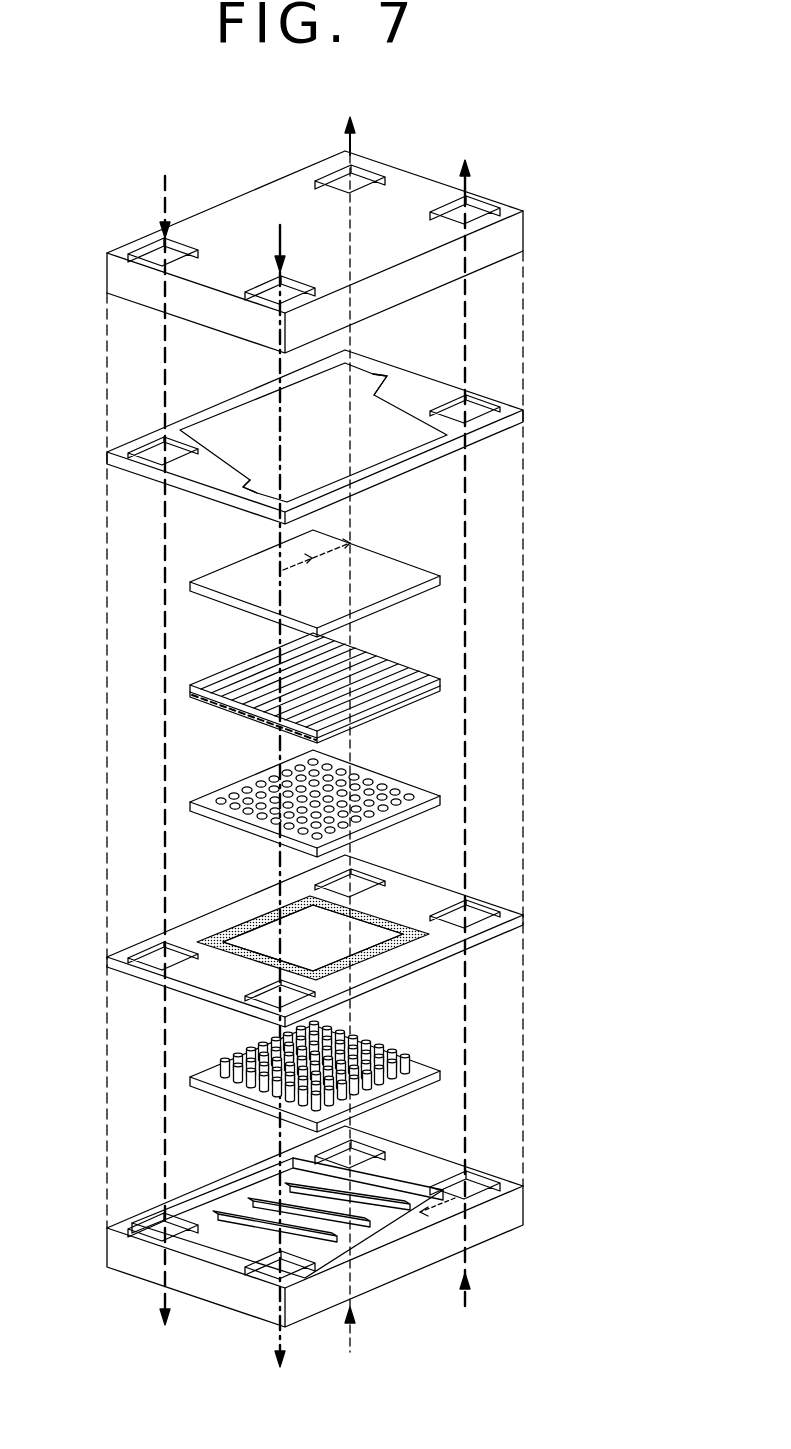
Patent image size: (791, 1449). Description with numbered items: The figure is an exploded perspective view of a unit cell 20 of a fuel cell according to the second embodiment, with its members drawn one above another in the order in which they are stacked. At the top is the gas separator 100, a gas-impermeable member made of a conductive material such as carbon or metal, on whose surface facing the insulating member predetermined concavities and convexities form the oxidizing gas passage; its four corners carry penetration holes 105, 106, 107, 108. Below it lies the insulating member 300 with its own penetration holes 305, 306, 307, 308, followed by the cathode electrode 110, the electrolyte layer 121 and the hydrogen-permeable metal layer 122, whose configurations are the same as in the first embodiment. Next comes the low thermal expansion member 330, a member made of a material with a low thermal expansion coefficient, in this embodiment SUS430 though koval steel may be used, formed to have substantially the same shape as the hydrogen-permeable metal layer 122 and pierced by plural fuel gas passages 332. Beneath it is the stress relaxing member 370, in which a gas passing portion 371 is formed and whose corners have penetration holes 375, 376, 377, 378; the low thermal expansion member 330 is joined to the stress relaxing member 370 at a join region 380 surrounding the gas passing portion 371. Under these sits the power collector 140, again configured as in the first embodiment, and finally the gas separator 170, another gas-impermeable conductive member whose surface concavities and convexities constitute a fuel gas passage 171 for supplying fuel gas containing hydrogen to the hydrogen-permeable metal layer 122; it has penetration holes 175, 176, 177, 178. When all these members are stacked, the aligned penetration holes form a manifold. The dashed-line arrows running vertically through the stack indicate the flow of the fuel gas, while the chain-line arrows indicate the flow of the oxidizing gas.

The unit cell 20 is at (610, 158).
The gas separator 100 is at (526, 235).
The penetration hole 105 is at (470, 218).
The penetration hole 106 is at (357, 183).
The penetration hole 107 is at (158, 262).
The penetration hole 108 is at (270, 298).
The insulating member 300 is at (510, 426).
The penetration hole 305 is at (468, 418).
The penetration hole 306 is at (380, 381).
The penetration hole 307 is at (160, 460).
The penetration hole 308 is at (266, 488).
The cathode electrode 110 is at (420, 562).
The electrolyte layer 121 is at (445, 677).
The hydrogen-permeable metal layer 122 is at (445, 717).
The low thermal expansion member 330 is at (437, 788).
The fuel gas passages 332 is at (367, 778).
The stress relaxing member 370 is at (497, 900).
The gas passing portion 371 is at (332, 938).
The penetration hole 375 is at (473, 925).
The penetration hole 376 is at (362, 880).
The penetration hole 377 is at (160, 955).
The penetration hole 378 is at (272, 1000).
The join region 380 is at (263, 912).
The power collector 140 is at (425, 1063).
The gas separator 170 is at (525, 1213).
The fuel gas passage 171 is at (360, 1240).
The penetration hole 175 is at (480, 1193).
The penetration hole 176 is at (363, 1160).
The penetration hole 177 is at (158, 1237).
The penetration hole 178 is at (258, 1285).